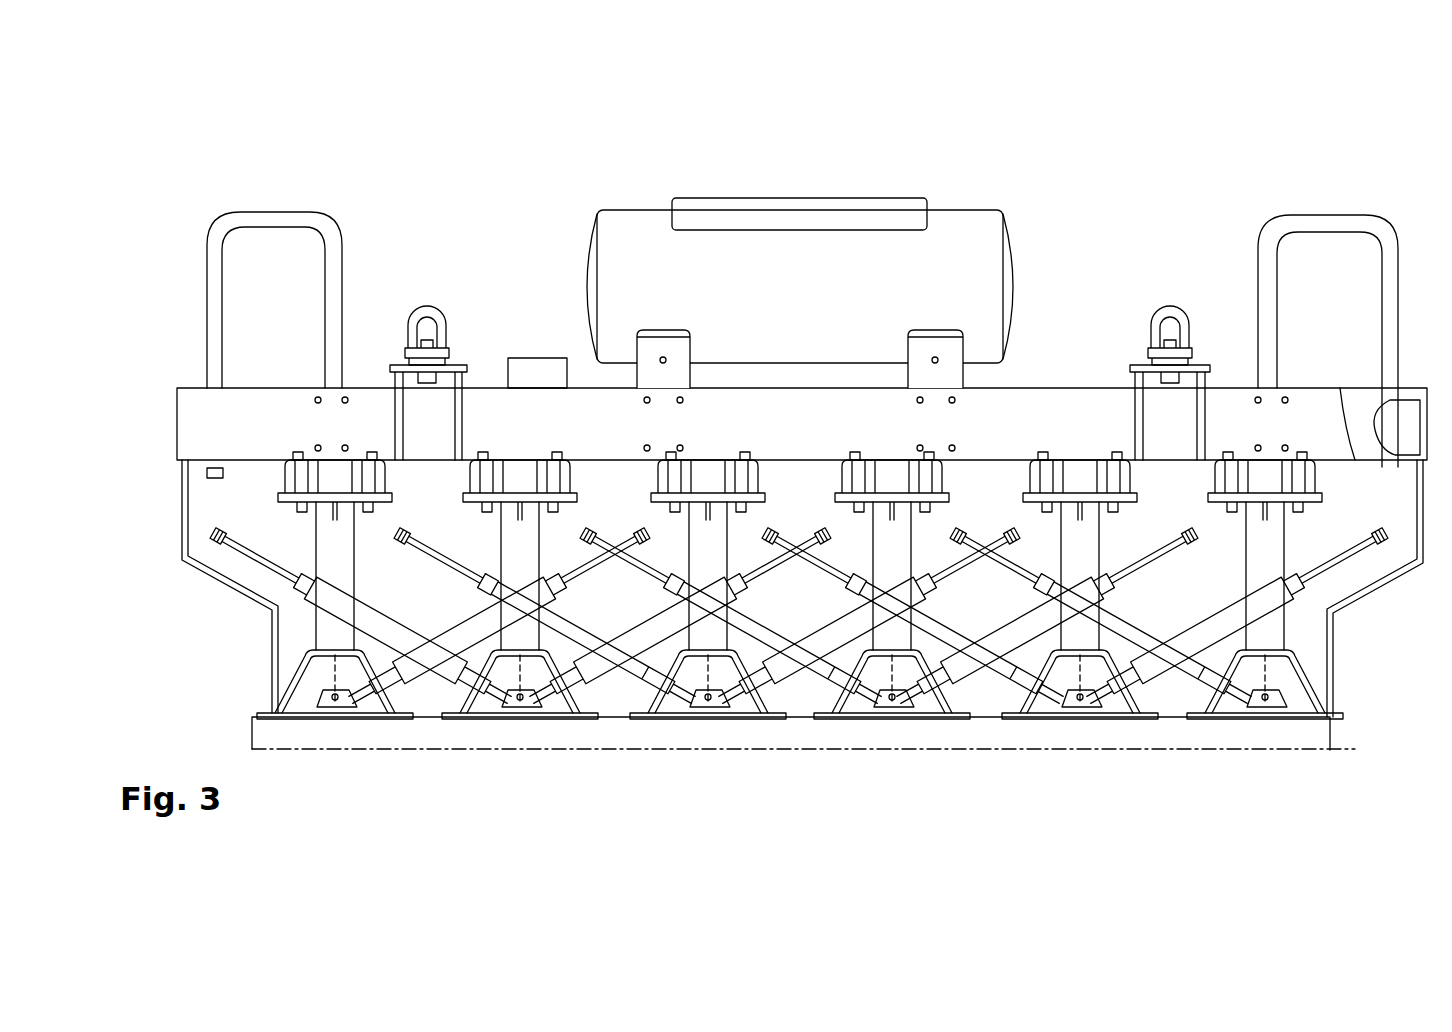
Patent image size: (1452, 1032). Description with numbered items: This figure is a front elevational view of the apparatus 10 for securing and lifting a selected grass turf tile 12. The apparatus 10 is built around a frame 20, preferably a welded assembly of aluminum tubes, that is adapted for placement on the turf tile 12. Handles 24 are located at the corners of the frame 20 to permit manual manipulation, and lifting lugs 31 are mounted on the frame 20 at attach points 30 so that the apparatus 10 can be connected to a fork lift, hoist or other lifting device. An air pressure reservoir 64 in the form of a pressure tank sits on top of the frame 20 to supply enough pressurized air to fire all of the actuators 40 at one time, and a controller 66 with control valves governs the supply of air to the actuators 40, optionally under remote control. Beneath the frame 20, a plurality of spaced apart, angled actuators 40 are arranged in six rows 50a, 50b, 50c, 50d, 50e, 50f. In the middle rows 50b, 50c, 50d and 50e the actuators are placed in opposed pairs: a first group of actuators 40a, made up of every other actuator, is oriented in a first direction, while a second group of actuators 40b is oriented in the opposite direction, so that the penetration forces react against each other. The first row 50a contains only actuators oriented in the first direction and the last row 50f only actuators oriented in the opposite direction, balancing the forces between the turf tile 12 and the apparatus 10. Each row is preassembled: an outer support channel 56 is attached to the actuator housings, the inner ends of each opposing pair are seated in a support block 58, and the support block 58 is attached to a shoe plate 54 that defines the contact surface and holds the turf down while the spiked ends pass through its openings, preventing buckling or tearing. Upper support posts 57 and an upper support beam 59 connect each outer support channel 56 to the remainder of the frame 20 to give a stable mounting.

The apparatus 10 is at (1046, 270).
The grass turf tile 12 is at (287, 738).
The frame 20 is at (362, 388).
The handles 24 is at (288, 213).
The attach points 30 is at (466, 365).
The lifting lugs 31 is at (428, 306).
The actuators 40 is at (343, 603).
The first group of actuators 40a is at (1105, 592).
The second group of actuators 40b is at (500, 593).
The first row of actuators 50a is at (335, 700).
The row of actuators 50b is at (518, 703).
The row of actuators 50c is at (707, 700).
The row of actuators 50d is at (885, 707).
The row of actuators 50e is at (1079, 708).
The last row of actuators 50f is at (1330, 690).
The shoe plate 54 is at (353, 713).
The outer support channel 56 is at (300, 670).
The upper support posts 57 is at (328, 537).
The support block 58 is at (318, 703).
The upper support beam 59 is at (285, 492).
The air pressure reservoir 64 is at (808, 297).
The controller 66 is at (540, 358).